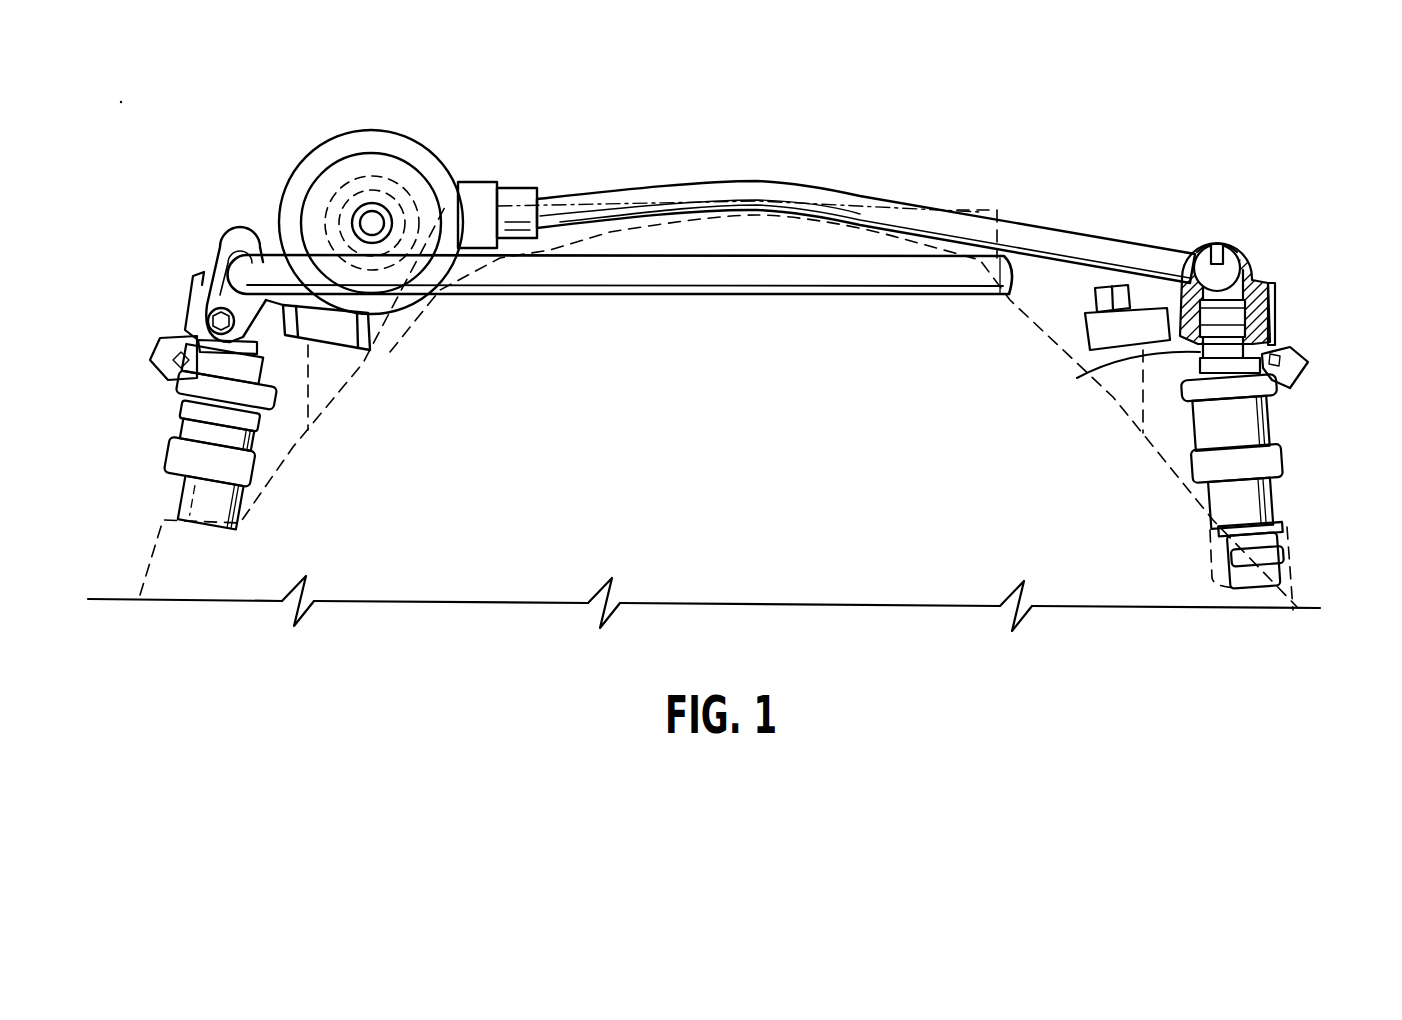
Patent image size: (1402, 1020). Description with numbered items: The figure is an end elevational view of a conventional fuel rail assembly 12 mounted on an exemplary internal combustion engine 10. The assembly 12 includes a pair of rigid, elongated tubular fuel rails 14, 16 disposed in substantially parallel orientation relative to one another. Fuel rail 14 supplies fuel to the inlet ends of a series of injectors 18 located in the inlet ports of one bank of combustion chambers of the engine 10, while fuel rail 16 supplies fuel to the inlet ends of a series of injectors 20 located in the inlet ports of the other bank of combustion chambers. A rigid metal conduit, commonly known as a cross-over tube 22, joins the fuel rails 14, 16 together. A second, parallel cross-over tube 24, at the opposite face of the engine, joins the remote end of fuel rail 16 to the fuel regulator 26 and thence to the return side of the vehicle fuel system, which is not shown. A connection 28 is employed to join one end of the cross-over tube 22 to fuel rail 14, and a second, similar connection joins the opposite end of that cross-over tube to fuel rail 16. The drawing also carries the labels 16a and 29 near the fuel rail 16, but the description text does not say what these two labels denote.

The engine 10 is at (448, 452).
The fuel rail assembly 12 is at (699, 212).
The fuel rail 14 is at (242, 230).
The fuel rail 16 is at (1229, 272).
The clamp mounting base 16a is at (1106, 368).
The injectors 18 is at (180, 455).
The injectors 20 is at (1283, 428).
The cross-over tube 22 is at (697, 272).
The second cross-over tube 24 is at (1057, 240).
The fuel regulator 26 is at (424, 158).
The connection 28 is at (182, 269).
The retaining clip 29 is at (1217, 246).